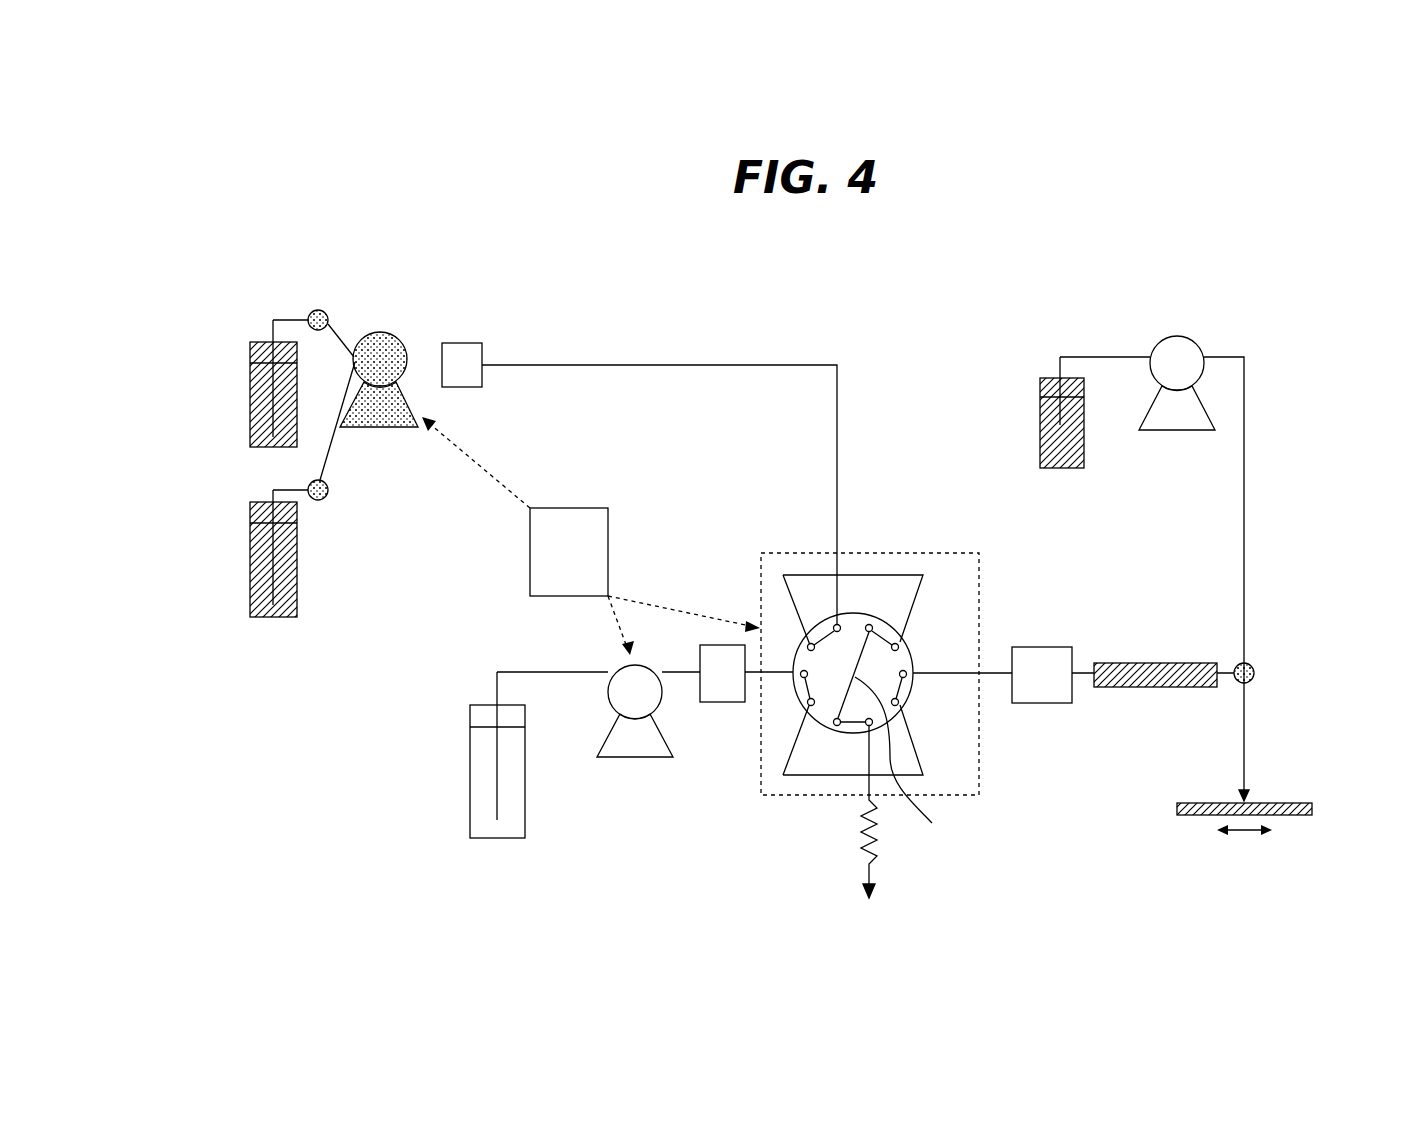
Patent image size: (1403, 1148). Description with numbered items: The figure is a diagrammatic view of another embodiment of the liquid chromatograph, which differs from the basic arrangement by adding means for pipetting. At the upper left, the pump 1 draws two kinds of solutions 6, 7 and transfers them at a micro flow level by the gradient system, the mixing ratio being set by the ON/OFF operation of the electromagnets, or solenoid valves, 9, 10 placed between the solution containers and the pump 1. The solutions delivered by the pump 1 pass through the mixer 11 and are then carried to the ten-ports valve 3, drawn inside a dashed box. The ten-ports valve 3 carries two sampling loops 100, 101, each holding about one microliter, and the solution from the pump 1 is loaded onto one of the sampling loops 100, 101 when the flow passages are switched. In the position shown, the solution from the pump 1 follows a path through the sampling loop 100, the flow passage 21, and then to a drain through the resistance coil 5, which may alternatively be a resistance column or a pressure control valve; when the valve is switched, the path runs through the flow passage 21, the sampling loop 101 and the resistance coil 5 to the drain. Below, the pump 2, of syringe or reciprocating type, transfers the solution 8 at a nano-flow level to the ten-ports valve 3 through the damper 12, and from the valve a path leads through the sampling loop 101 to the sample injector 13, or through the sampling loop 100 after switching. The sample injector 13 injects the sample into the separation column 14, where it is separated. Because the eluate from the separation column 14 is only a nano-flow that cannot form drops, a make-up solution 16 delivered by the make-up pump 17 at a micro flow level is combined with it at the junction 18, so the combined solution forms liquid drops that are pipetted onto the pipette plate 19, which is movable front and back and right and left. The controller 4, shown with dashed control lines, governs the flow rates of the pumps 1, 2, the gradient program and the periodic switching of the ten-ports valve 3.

The pump 1 is at (383, 328).
The pump 2 is at (633, 760).
The ten-ports valve 3 is at (875, 682).
The controller 4 is at (570, 508).
The resistance coil 5 is at (868, 833).
The solution 6 is at (250, 385).
The solution 7 is at (250, 543).
The solution 8 is at (470, 755).
The electromagnet (solenoid valve) 9 is at (318, 305).
The electromagnet (solenoid valve) 10 is at (330, 490).
The mixer 11 is at (457, 340).
The damper 12 is at (725, 702).
The sample injector 13 is at (1030, 647).
The separation column 14 is at (1160, 663).
The make-up solution 16 is at (1040, 417).
The make-up pump 17 is at (1182, 336).
The mixing valve 18 is at (1257, 672).
The pipette plate 19 is at (1287, 803).
The flow passage 21 is at (912, 759).
The sampling loop 100 is at (913, 602).
The sampling loop 101 is at (908, 732).